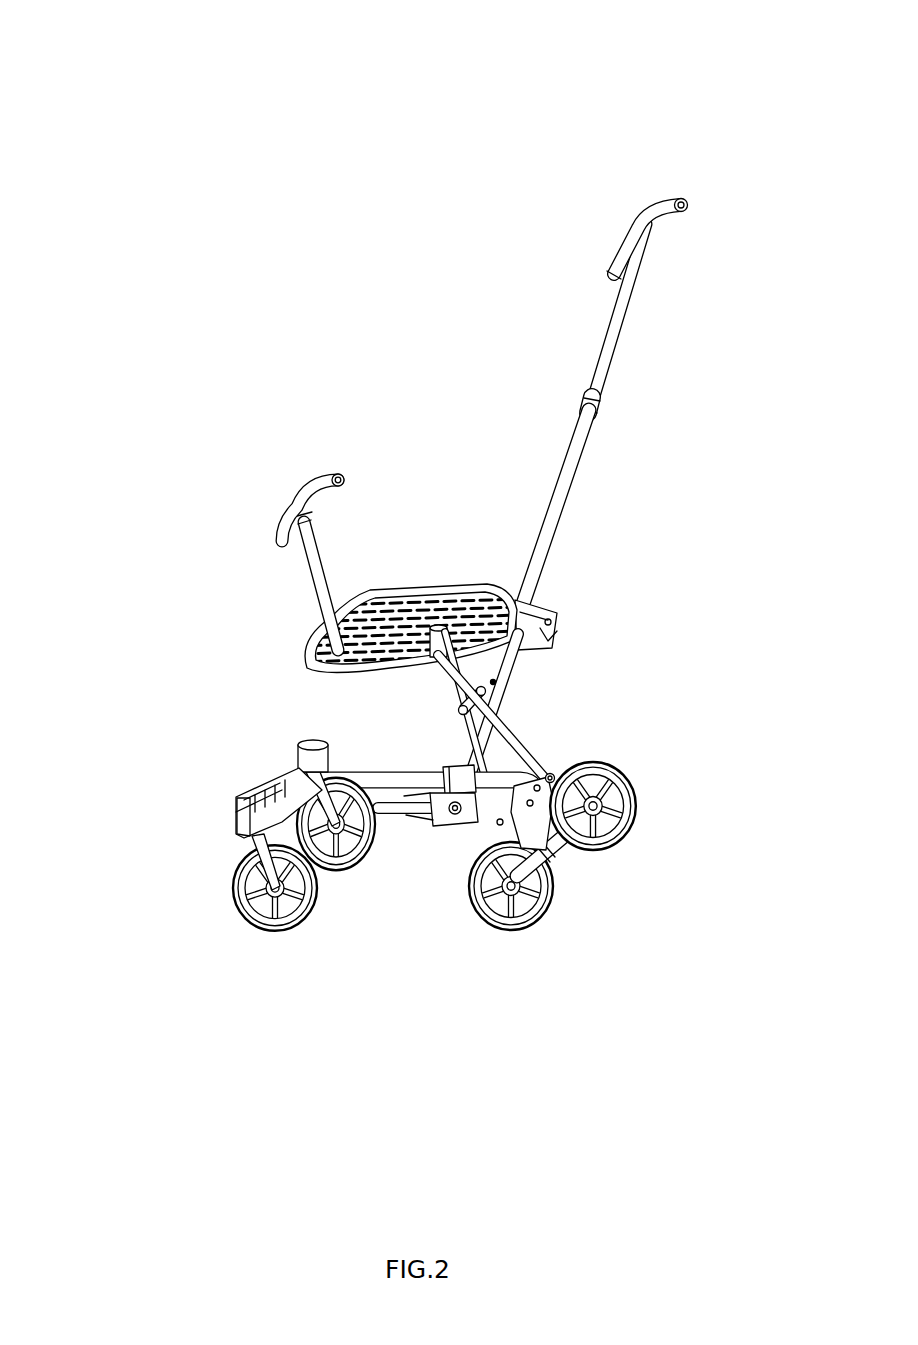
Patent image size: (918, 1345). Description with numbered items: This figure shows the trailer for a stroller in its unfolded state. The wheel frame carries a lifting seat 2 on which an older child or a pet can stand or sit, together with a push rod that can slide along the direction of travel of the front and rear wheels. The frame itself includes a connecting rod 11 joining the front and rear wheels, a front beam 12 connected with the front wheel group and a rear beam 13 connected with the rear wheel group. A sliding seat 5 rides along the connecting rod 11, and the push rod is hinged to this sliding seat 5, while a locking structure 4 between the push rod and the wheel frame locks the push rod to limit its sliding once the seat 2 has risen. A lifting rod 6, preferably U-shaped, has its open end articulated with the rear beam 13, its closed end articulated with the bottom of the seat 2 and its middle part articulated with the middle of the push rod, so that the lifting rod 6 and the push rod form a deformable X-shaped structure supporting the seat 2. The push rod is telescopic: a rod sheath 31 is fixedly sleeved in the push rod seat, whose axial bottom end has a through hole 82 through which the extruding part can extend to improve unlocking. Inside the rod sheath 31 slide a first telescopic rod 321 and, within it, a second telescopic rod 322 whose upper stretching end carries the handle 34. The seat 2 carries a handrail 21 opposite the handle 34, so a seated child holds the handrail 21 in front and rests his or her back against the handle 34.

The seat 2 is at (422, 595).
The locking structure 4 is at (452, 820).
The sliding seat 5 is at (513, 870).
The lifting rod 6 is at (455, 698).
The connecting rod 11 is at (420, 780).
The front beam 12 is at (240, 805).
The rear beam 13 is at (555, 842).
The handrail 21 is at (312, 493).
The rod sheath 31 is at (503, 668).
The first telescopic rod 321 is at (563, 500).
The second telescopic rod 322 is at (613, 347).
The handle 34 is at (620, 253).
The through hole 82 is at (450, 812).